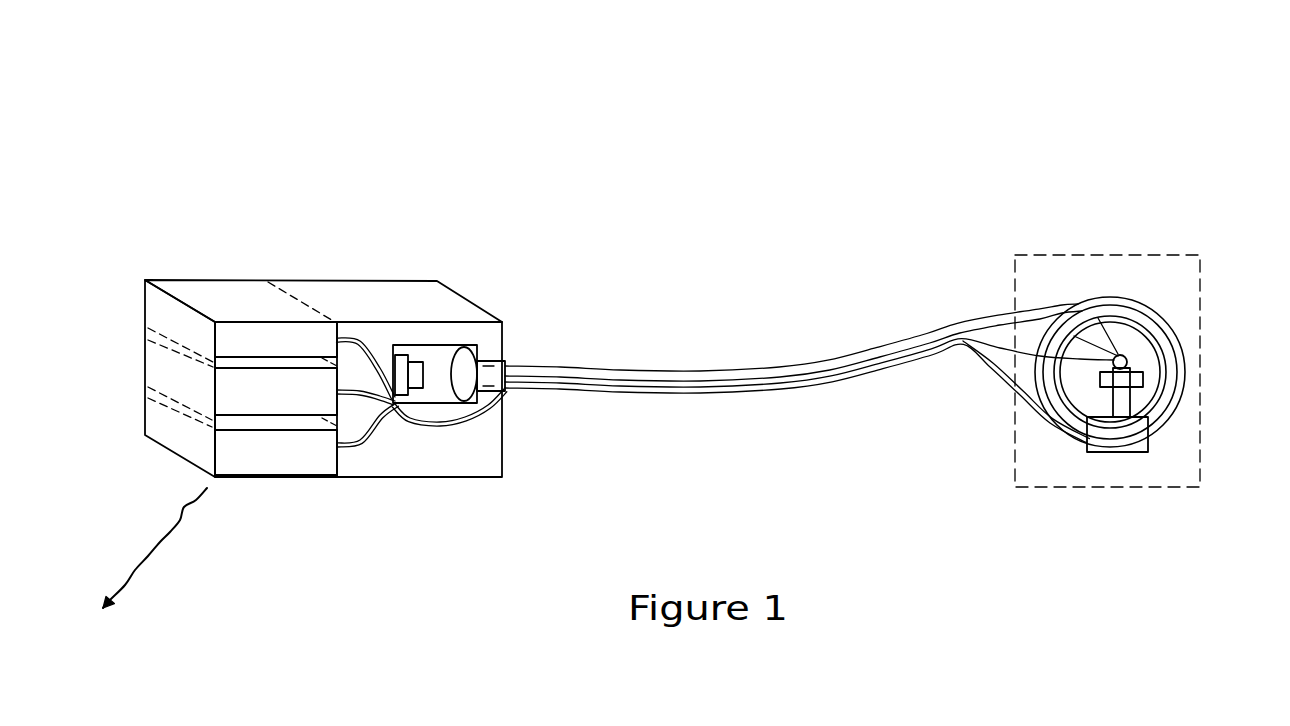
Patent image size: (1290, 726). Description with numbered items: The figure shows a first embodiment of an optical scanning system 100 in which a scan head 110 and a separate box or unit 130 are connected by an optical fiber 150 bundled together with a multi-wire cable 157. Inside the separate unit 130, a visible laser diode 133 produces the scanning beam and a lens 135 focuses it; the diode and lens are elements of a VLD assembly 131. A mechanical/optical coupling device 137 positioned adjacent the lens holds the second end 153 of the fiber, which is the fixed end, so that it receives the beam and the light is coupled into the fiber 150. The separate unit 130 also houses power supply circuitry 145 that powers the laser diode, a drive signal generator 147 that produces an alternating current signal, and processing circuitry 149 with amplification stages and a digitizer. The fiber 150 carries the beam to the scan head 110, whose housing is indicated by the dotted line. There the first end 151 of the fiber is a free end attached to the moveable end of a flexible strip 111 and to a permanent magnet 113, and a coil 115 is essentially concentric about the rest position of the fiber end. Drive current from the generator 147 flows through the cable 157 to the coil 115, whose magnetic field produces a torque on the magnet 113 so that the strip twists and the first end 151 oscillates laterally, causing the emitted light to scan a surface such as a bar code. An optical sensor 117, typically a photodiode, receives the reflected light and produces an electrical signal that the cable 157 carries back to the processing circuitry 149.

The scanning system 100 is at (655, 117).
The scan head 110 is at (1100, 225).
The flexible strip 111 is at (1125, 397).
The permanent magnet 113 is at (1145, 380).
The coil 115 is at (1133, 302).
The optical sensor 117 is at (1138, 437).
The separate unit 130 is at (255, 208).
The VLD assembly 131 is at (442, 353).
The visible laser diode 133 is at (398, 392).
The lens 135 is at (467, 390).
The mechanical/optical coupling device 137 is at (493, 387).
The power supply circuitry 145 is at (232, 340).
The drive signal generator 147 is at (223, 387).
The processing circuitry 149 is at (225, 450).
The optical fiber 150 is at (717, 371).
The first end of the fiber 151 is at (1127, 363).
The second end of the fiber 153 is at (490, 365).
The multi-wire cable 157 is at (802, 387).